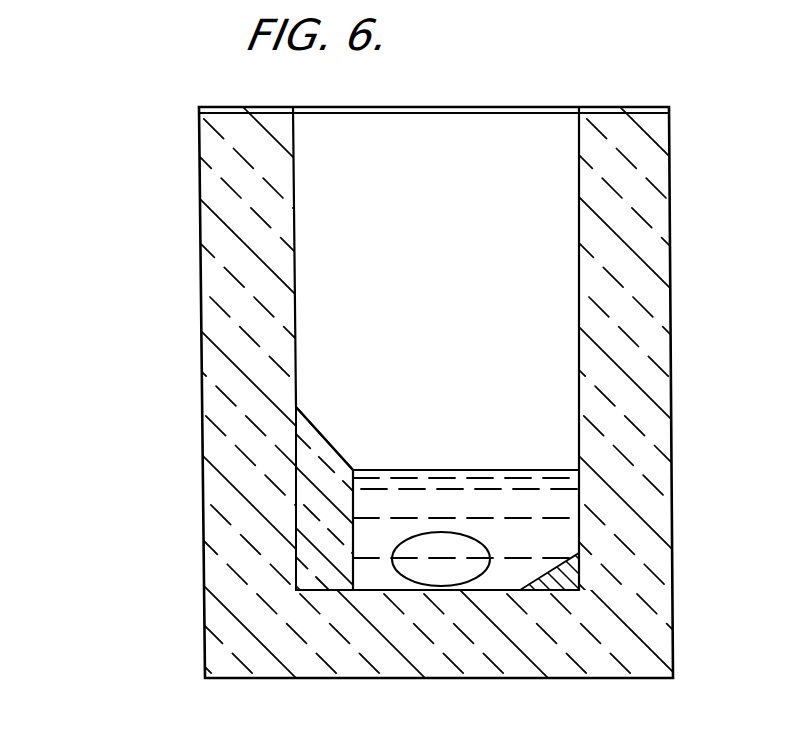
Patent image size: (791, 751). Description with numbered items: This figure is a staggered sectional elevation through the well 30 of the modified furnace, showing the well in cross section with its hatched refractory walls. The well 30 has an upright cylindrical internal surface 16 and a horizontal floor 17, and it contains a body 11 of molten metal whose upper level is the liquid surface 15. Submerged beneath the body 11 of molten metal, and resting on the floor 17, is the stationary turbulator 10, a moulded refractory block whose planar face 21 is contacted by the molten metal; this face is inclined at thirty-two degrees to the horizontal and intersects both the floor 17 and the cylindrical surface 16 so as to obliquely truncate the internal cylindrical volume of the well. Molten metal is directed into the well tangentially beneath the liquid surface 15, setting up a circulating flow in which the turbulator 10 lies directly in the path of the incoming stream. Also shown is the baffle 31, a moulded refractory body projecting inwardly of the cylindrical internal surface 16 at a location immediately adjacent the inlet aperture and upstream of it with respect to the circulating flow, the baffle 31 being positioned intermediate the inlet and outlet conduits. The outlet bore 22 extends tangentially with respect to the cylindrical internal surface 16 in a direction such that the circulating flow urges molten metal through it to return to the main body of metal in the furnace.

The well 30 is at (112, 266).
The cylindrical internal surface 16 is at (585, 185).
The liquid surface 15 is at (537, 470).
The body of molten metal 11 is at (550, 500).
The planar face 21 is at (580, 555).
The turbulator 10 is at (574, 566).
The baffle 31 is at (297, 500).
The floor 17 is at (368, 590).
The outlet bore 22 is at (447, 586).